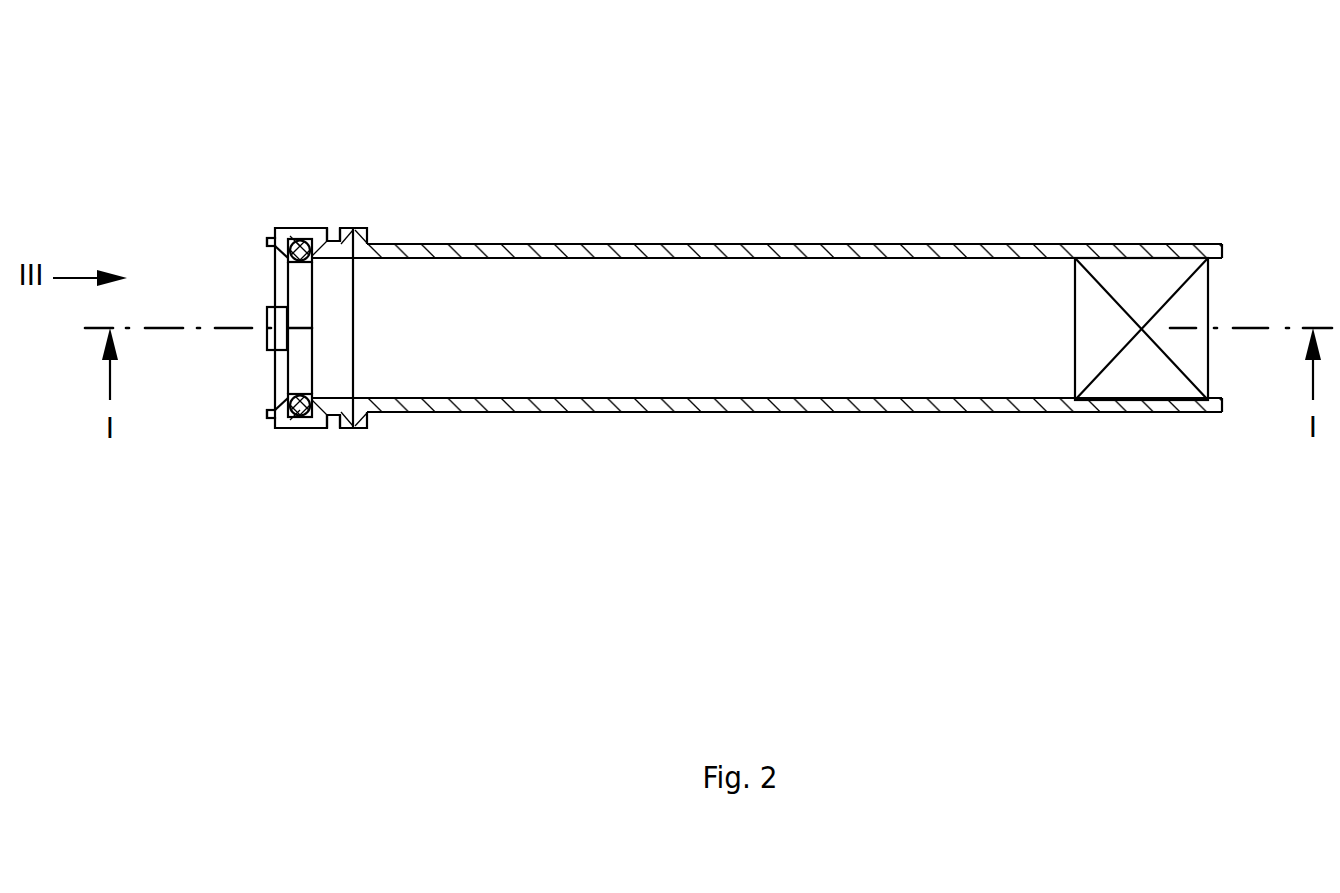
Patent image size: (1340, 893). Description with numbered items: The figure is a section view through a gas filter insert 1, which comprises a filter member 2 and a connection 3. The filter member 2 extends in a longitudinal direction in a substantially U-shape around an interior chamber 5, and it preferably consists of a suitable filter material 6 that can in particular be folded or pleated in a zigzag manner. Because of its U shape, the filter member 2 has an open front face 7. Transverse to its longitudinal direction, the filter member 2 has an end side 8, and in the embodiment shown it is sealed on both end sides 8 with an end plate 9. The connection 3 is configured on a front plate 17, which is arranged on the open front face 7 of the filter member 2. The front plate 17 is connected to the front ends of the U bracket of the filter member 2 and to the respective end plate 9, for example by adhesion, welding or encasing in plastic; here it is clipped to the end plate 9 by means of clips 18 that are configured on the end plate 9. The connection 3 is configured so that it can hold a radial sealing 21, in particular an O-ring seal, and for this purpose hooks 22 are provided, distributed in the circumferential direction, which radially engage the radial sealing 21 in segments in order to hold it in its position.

The gas filter insert 1 is at (1150, 199).
The filter member 2 is at (1218, 288).
The connection 3 is at (292, 217).
The interior chamber 5 is at (730, 348).
The filter material 6 is at (1148, 375).
The open front face 7 is at (382, 360).
The end side 8 is at (623, 257).
The end plate 9 is at (785, 250).
The front plate 17 is at (297, 423).
The clips 18 is at (335, 240).
The radial sealing 21 is at (288, 260).
The hooks 22 is at (270, 240).